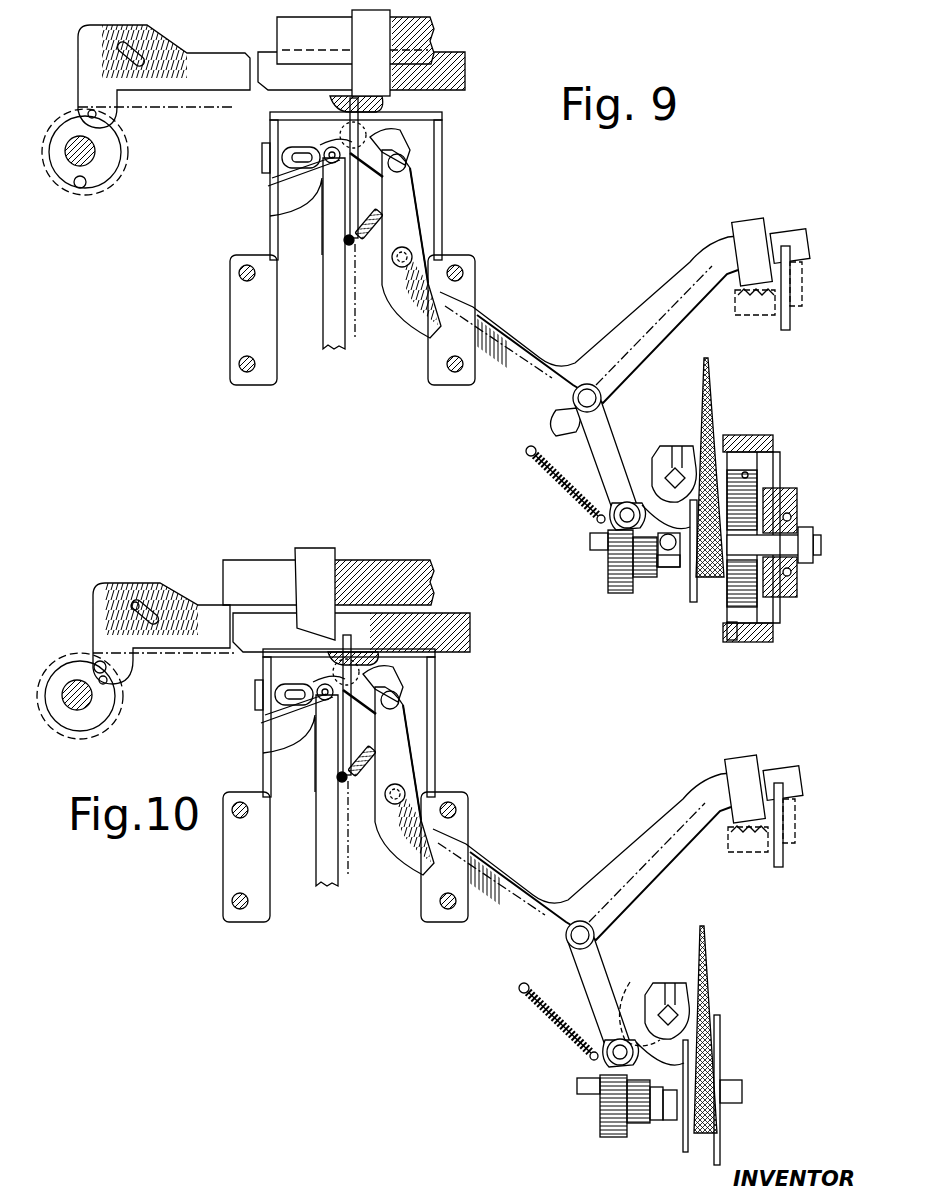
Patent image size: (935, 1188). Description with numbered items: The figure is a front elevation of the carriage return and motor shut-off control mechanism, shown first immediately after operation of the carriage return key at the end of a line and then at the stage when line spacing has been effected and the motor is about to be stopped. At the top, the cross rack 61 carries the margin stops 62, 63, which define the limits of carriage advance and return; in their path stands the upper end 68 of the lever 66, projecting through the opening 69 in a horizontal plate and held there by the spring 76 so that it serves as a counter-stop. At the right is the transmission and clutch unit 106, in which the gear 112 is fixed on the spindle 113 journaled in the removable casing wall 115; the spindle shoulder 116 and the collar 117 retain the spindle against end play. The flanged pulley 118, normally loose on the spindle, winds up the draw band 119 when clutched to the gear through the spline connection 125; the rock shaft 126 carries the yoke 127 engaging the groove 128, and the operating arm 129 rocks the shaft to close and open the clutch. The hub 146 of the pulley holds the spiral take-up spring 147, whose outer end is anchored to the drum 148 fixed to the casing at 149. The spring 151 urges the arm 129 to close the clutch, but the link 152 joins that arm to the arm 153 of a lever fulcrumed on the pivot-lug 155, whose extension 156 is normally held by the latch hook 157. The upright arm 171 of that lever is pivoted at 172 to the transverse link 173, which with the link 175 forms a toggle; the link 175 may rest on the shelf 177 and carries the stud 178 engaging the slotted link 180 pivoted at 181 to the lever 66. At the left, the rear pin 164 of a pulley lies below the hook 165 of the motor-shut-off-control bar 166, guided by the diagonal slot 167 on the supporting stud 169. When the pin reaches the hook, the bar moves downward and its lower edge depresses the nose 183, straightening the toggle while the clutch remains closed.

In FIG. 9, the cross rack 61 is at (279, 40).
In FIG. 10, the cross rack 61 is at (418, 562).
In FIG. 9, the margin stop 62 is at (395, 82).
In FIG. 10, the margin stop 63 is at (303, 555).
In FIG. 9, the lever 66 is at (325, 303).
In FIG. 10, the lever 66 is at (317, 791).
In FIG. 9, the upper end 68 is at (350, 86).
In FIG. 10, the opening 69 is at (358, 657).
In FIG. 9, the spring 76 is at (364, 256).
In FIG. 10, the spring 76 is at (356, 756).
In FIG. 9, the transmission and clutch unit 106 is at (778, 445).
In FIG. 9, the gear 112 is at (614, 594).
In FIG. 10, the gear 112 is at (605, 1137).
In FIG. 9, the spindle 113 is at (822, 545).
In FIG. 10, the spindle 113 is at (577, 1086).
In FIG. 9, the casing wall 115 is at (782, 640).
In FIG. 9, the spindle shoulder 116 is at (792, 574).
In FIG. 9, the collar 117 is at (808, 527).
In FIG. 9, the flanged pulley 118 is at (696, 603).
In FIG. 10, the flanged pulley 118 is at (722, 1165).
In FIG. 9, the draw band 119 is at (712, 388).
In FIG. 10, the draw band 119 is at (708, 975).
In FIG. 10, the spline connection 125 is at (670, 1122).
In FIG. 9, the rock shaft 126 is at (680, 446).
In FIG. 10, the rock shaft 126 is at (675, 988).
In FIG. 9, the yoke 127 is at (672, 568).
In FIG. 10, the yoke 127 is at (632, 1012).
In FIG. 9, the groove 128 is at (666, 570).
In FIG. 10, the groove 128 is at (656, 1120).
In FIG. 9, the operating arm 129 is at (642, 500).
In FIG. 10, the operating arm 129 is at (579, 1060).
In FIG. 9, the hub 146 is at (790, 512).
In FIG. 9, the spiral take-up spring 147 is at (738, 641).
In FIG. 9, the drum 148 is at (746, 470).
In FIG. 9, the casing fixing point 149 is at (785, 490).
In FIG. 9, the spring 151 is at (554, 478).
In FIG. 10, the spring 151 is at (539, 1021).
In FIG. 9, the link 152 is at (556, 420).
In FIG. 10, the link 152 is at (612, 986).
In FIG. 9, the arm 153 is at (548, 355).
In FIG. 10, the arm 153 is at (582, 856).
In FIG. 9, the pivot-lug 155 is at (411, 256).
In FIG. 10, the pivot-lug 155 is at (438, 777).
In FIG. 9, the extension 156 is at (795, 238).
In FIG. 10, the extension 156 is at (790, 803).
In FIG. 9, the latch hook 157 is at (796, 268).
In FIG. 10, the latch hook 157 is at (809, 816).
In FIG. 9, the rear pin 164 is at (98, 192).
In FIG. 10, the rear pin 164 is at (95, 665).
In FIG. 9, the hook 165 is at (76, 107).
In FIG. 10, the hook 165 is at (110, 684).
In FIG. 9, the motor-shut-off-control bar 166 is at (190, 70).
In FIG. 10, the motor-shut-off-control bar 166 is at (280, 632).
In FIG. 9, the diagonal slot 167 is at (124, 60).
In FIG. 10, the diagonal slot 167 is at (158, 618).
In FIG. 10, the supporting stud 169 is at (143, 604).
In FIG. 9, the upright arm 171 is at (412, 226).
In FIG. 10, the upright arm 171 is at (432, 781).
In FIG. 9, the pivot 172 is at (407, 163).
In FIG. 10, the pivot 172 is at (437, 696).
In FIG. 9, the transverse link 173 is at (408, 142).
In FIG. 10, the transverse link 173 is at (428, 679).
In FIG. 9, the link 175 is at (285, 146).
In FIG. 10, the link 175 is at (283, 676).
In FIG. 9, the shelf 177 is at (270, 184).
In FIG. 10, the shelf 177 is at (269, 718).
In FIG. 9, the stud 178 is at (282, 160).
In FIG. 10, the stud 178 is at (261, 701).
In FIG. 9, the link 180 is at (270, 216).
In FIG. 10, the link 180 is at (260, 753).
In FIG. 9, the pivot 181 is at (324, 165).
In FIG. 10, the pivot 181 is at (326, 729).
In FIG. 9, the nose 183 is at (328, 106).